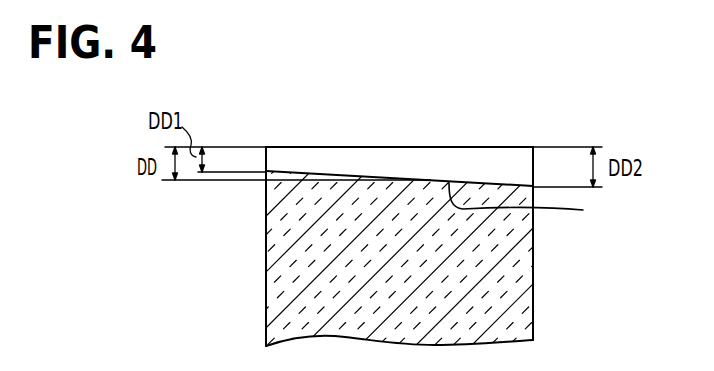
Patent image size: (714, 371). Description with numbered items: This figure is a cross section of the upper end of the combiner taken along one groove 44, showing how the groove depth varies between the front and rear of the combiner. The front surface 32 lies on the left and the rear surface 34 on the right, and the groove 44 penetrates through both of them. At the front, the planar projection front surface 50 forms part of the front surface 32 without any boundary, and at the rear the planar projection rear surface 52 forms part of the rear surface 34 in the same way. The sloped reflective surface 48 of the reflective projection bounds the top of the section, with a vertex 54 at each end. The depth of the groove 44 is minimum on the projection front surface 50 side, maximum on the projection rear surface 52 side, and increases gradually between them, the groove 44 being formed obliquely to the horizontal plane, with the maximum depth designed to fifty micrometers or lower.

The front surface 32 is at (266, 235).
The rear surface 34 is at (533, 248).
The groove 44 is at (436, 198).
The reflective surface 48 is at (400, 155).
The projection front surface 50 is at (266, 159).
The projection rear surface 52 is at (534, 161).
The vertex 54 is at (267, 147).